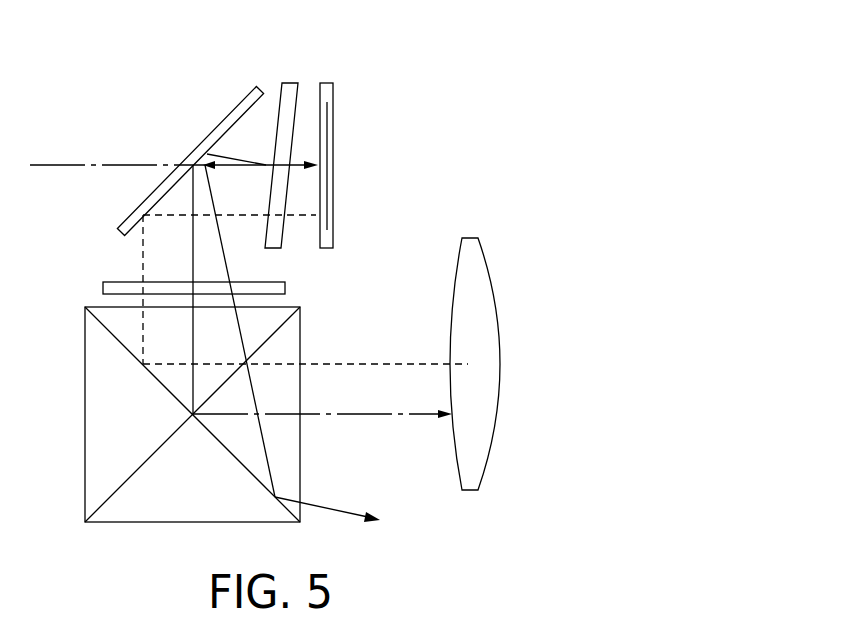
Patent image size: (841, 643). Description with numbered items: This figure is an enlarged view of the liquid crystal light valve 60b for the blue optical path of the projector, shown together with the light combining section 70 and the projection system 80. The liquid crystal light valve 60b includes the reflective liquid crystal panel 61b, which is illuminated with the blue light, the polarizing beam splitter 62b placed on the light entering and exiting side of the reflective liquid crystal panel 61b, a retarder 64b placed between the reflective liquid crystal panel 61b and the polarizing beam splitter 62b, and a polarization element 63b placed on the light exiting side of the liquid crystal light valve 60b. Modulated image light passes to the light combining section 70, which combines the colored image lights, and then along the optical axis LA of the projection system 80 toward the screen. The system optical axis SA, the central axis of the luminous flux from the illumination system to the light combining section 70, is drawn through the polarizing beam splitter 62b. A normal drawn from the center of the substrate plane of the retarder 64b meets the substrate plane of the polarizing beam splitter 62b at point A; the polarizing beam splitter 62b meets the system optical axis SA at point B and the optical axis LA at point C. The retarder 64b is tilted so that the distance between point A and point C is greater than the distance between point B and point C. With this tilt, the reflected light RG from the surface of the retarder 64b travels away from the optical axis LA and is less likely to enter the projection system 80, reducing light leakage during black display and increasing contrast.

The liquid crystal light valve for color B 60b is at (291, 171).
The reflective liquid crystal panel 61b is at (334, 195).
The polarizing beam splitter 62b is at (261, 89).
The polarization element 63b is at (257, 274).
The retarder 64b is at (302, 92).
The light combining section 70 is at (85, 370).
The projection system 80 is at (472, 237).
The point A is at (208, 158).
The point B is at (204, 173).
The point C is at (145, 216).
The optical axis of the projection system LA is at (347, 362).
The system optical axis SA is at (402, 418).
The reflected light RG is at (348, 510).